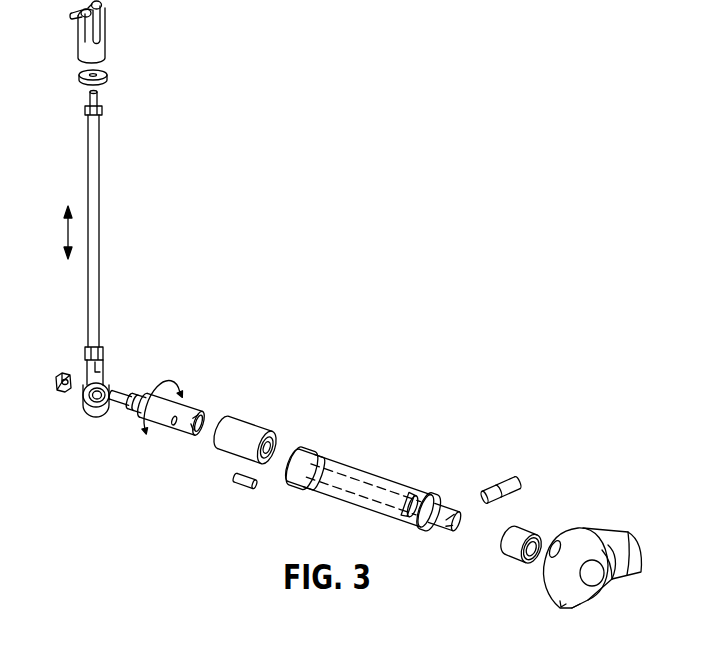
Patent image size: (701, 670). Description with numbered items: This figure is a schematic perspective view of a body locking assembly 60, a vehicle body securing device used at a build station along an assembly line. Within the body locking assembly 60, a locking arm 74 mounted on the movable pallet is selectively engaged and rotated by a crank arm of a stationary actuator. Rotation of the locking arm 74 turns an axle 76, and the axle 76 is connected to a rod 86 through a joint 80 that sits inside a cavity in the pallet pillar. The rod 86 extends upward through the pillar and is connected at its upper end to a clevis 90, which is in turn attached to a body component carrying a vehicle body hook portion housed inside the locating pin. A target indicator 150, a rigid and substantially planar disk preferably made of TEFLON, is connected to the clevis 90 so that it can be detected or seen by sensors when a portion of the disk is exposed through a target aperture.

The body locking assembly 60 is at (366, 290).
The locking arm 74 is at (510, 476).
The axle 76 is at (362, 478).
The joint 80 is at (82, 401).
The rod 86 is at (99, 229).
The clevis 90 is at (106, 40).
The target indicator 150 is at (107, 75).